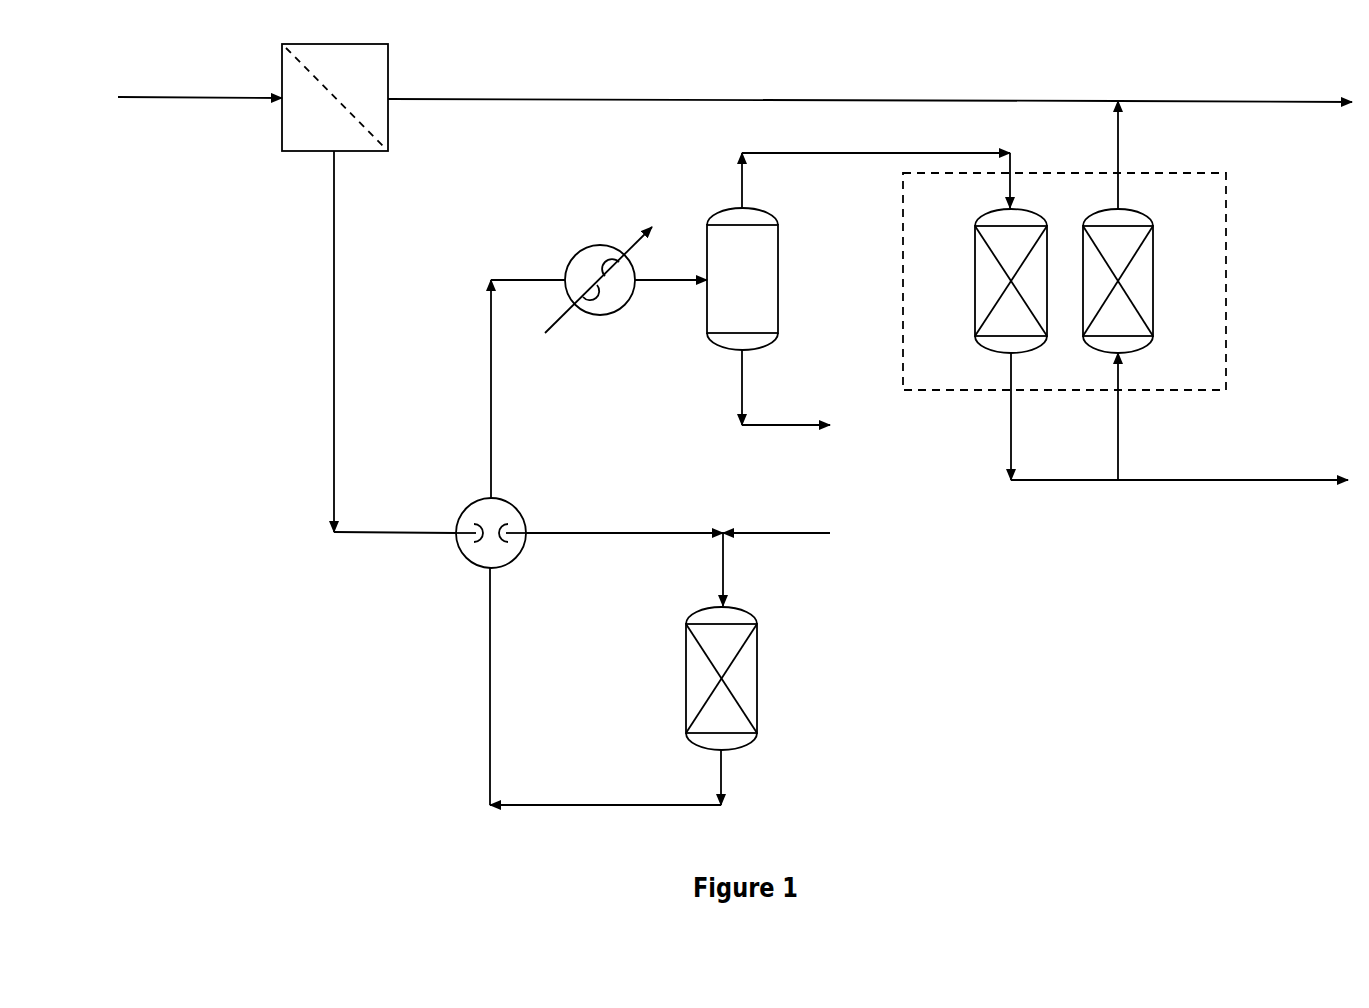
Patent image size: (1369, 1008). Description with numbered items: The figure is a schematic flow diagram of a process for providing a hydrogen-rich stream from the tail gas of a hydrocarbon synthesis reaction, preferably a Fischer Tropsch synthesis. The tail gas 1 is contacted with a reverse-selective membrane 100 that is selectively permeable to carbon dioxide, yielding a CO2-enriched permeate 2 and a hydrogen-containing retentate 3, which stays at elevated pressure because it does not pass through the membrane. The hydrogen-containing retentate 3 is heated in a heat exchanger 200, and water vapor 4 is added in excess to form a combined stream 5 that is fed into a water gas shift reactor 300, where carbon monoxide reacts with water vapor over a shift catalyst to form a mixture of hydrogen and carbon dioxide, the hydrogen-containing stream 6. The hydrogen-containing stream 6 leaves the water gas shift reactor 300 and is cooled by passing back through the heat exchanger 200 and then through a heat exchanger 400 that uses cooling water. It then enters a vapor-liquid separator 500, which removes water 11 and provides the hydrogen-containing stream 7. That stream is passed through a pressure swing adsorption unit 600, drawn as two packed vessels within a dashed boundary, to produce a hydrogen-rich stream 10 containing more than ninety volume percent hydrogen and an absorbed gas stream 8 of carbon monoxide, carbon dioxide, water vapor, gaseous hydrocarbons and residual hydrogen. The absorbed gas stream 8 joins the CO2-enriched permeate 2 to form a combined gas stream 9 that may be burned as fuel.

The tail gas 1 is at (200, 84).
The CO2-enriched permeate 2 is at (753, 87).
The hydrogen-containing retentate 3 is at (395, 342).
The water vapor 4 is at (776, 520).
The combined stream 5 is at (712, 569).
The hydrogen-containing stream 6 is at (605, 687).
The hydrogen-containing stream 7 is at (876, 166).
The absorbed gas stream 8 is at (1107, 154).
The combined gas stream 9 is at (1235, 88).
The hydrogen-rich stream 10 is at (1179, 416).
The water 11 is at (786, 387).
The reverse-selective membrane 100 is at (363, 115).
The heat exchanger 200 is at (510, 542).
The water gas shift reactor 300 is at (750, 687).
The heat exchanger 400 is at (626, 280).
The vapor-liquid separator 500 is at (771, 288).
The pressure swing adsorption unit 600 is at (1091, 300).